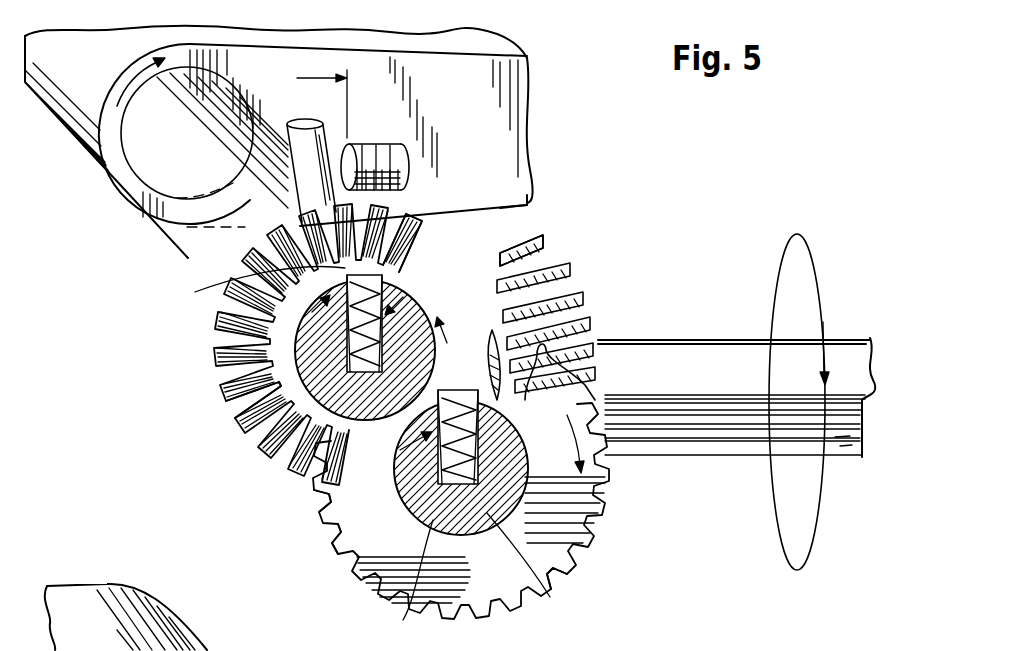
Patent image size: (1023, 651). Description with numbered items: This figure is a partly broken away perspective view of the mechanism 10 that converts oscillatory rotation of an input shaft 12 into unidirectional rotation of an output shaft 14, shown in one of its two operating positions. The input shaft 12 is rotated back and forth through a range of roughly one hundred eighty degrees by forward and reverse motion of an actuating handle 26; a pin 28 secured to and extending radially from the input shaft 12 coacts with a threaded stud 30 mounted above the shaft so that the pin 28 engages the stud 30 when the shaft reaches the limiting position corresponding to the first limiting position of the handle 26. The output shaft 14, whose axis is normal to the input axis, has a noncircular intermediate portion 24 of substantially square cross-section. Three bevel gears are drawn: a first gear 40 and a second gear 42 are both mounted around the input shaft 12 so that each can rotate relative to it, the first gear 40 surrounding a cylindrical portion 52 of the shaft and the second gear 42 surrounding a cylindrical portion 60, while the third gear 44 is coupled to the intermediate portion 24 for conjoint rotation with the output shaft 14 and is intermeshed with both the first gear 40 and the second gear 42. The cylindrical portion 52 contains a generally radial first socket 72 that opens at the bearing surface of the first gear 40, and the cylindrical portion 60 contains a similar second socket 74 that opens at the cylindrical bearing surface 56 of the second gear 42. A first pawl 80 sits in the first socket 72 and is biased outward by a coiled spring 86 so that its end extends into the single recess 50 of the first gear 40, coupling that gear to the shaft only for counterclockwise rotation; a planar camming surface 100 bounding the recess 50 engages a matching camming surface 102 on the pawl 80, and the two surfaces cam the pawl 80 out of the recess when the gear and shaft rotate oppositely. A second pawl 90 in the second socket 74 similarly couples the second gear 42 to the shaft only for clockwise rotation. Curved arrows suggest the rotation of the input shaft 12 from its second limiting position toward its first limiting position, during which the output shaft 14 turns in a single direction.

The mechanism 10 is at (672, 178).
The input shaft 12 is at (193, 257).
The output shaft 14 is at (688, 335).
The intermediate portion 24 is at (697, 447).
The actuating handle 26 is at (532, 193).
The pin 28 is at (298, 118).
The threaded stud 30 is at (400, 163).
The first gear 40 is at (226, 400).
The second gear 42 is at (360, 588).
The third gear 44 is at (568, 268).
The recess 50 is at (205, 290).
The cylindrical portion 52 is at (240, 433).
The cylindrical bearing surface 56 is at (410, 510).
The cylindrical portion 60 is at (410, 607).
The first socket 72 is at (295, 352).
The second socket 74 is at (550, 595).
The first pawl 80 is at (498, 250).
The coiled spring 86 is at (362, 415).
The second pawl 90 is at (360, 482).
The camming surface 100 is at (355, 272).
The camming surface 102 is at (440, 243).